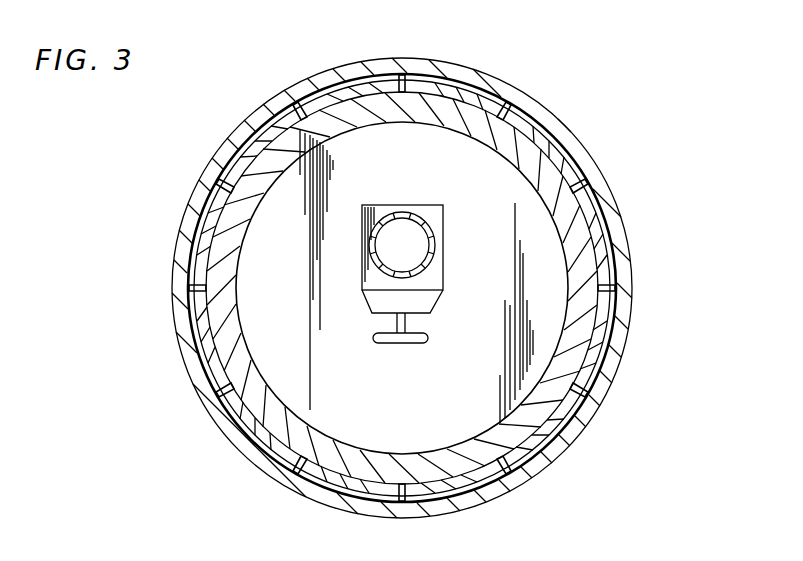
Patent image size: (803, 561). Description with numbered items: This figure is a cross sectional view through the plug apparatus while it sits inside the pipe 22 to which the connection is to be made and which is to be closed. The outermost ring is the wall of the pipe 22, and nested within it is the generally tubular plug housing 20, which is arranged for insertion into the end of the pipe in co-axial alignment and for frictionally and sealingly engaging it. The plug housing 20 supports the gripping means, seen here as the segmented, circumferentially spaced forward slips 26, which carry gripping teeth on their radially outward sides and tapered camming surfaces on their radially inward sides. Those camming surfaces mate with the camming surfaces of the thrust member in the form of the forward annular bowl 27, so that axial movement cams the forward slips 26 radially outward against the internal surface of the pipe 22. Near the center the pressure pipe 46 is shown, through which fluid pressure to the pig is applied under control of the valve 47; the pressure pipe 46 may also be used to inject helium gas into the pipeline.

The plug housing 20 is at (575, 281).
The pipe 22 is at (484, 75).
The forward slips 26 is at (533, 128).
The forward annular bowl 27 is at (575, 207).
The pressure pipe 46 is at (430, 235).
The valve 47 is at (444, 280).